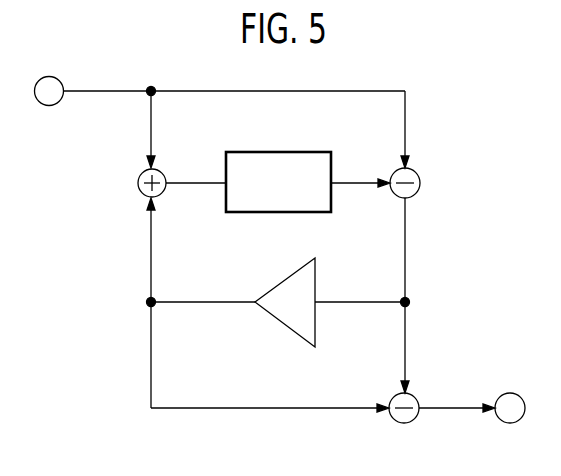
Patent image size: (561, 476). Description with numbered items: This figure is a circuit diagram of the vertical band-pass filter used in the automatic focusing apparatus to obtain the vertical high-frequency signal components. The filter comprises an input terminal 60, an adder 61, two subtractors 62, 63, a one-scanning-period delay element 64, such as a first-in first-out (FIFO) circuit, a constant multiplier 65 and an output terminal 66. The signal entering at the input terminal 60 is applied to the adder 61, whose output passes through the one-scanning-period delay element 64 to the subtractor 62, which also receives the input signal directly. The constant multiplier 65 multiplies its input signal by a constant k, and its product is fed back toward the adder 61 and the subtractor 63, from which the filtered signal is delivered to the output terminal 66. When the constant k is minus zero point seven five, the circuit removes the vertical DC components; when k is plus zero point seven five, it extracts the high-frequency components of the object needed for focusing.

The input terminal 60 is at (49, 84).
The adder 61 is at (138, 182).
The subtractor 62 is at (420, 183).
The subtractor 63 is at (393, 419).
The one-scanning-period delay element 64 is at (265, 151).
The constant multiplier 65 is at (290, 277).
The output terminal 66 is at (508, 397).